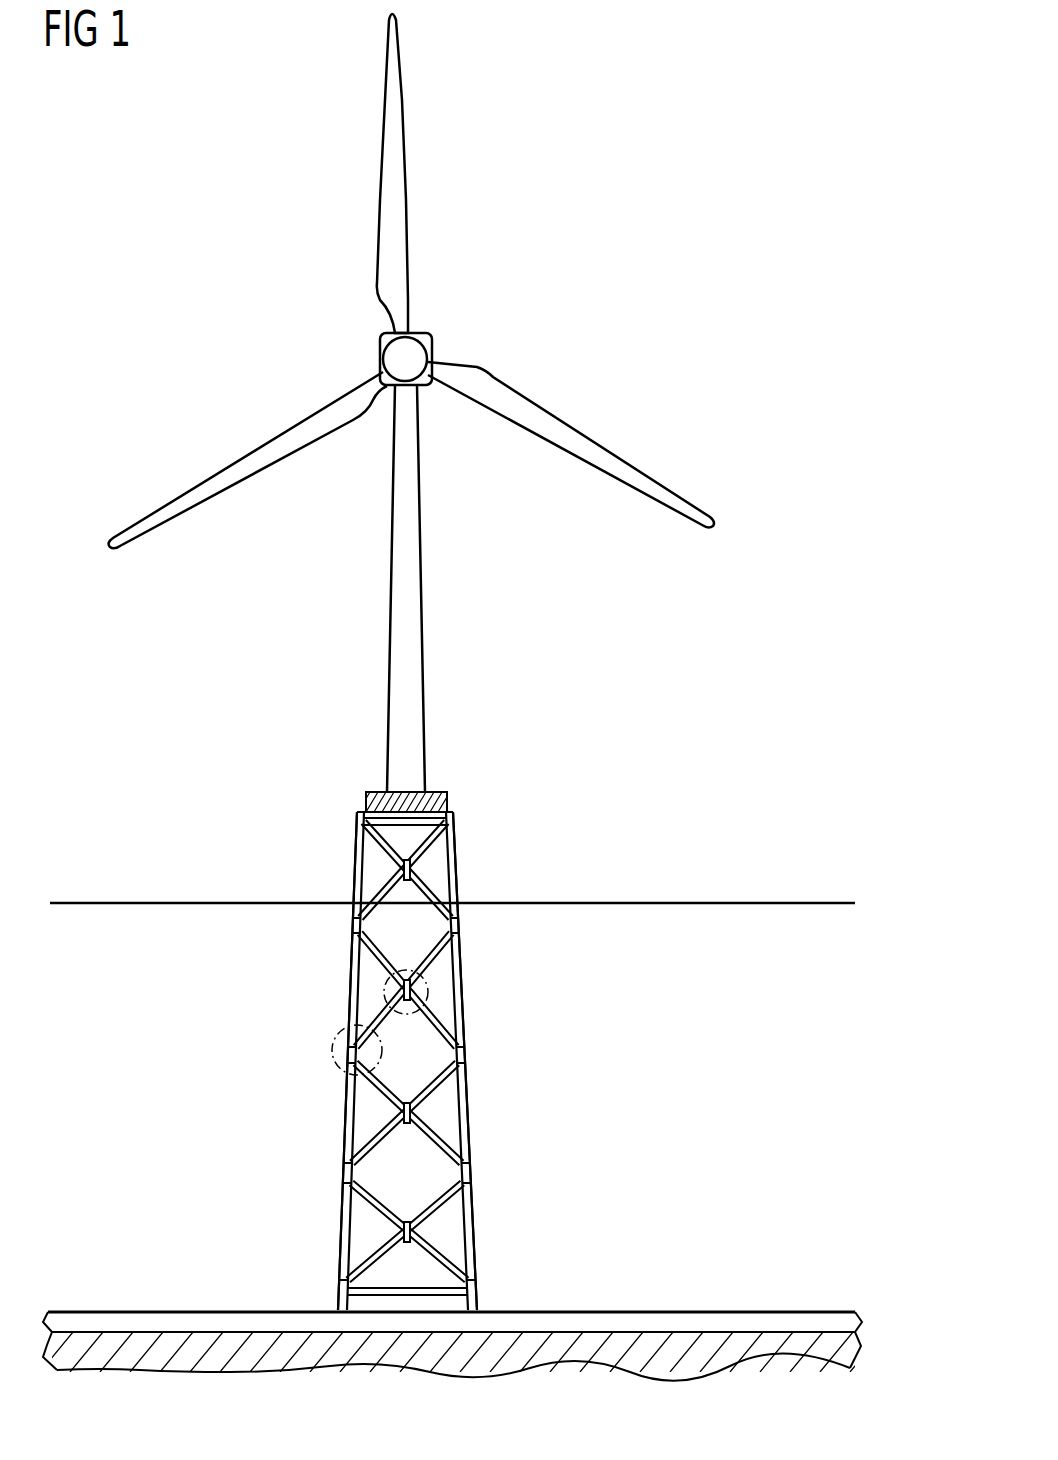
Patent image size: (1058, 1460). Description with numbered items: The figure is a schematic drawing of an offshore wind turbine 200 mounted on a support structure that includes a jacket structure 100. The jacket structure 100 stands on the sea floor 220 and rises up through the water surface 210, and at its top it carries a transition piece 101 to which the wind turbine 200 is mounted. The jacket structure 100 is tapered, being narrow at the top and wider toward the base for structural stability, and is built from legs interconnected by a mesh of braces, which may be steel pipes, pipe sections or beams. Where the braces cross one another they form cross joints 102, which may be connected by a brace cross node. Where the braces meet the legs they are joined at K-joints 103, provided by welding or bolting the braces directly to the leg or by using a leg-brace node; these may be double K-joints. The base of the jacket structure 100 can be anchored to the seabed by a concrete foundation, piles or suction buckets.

The jacket structure 100 is at (302, 1061).
The transition piece 101 is at (366, 796).
The cross joint 102 is at (385, 987).
The K-joint 103 is at (332, 1046).
The offshore wind turbine 200 is at (208, 240).
The water surface 210 is at (212, 900).
The sea floor 220 is at (212, 1322).